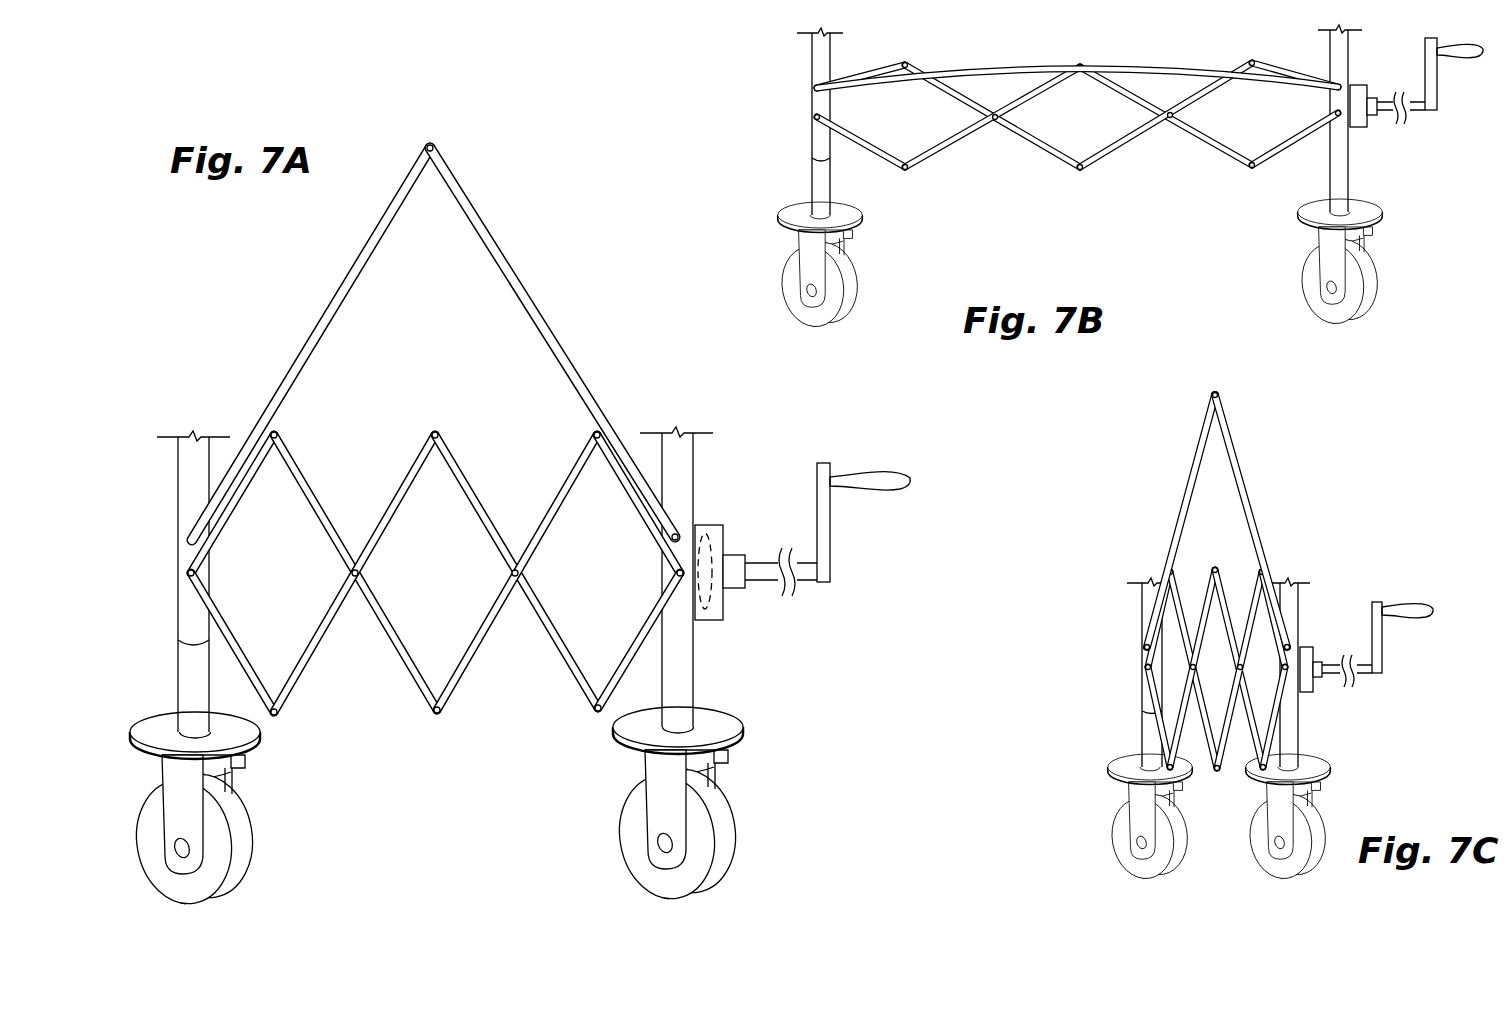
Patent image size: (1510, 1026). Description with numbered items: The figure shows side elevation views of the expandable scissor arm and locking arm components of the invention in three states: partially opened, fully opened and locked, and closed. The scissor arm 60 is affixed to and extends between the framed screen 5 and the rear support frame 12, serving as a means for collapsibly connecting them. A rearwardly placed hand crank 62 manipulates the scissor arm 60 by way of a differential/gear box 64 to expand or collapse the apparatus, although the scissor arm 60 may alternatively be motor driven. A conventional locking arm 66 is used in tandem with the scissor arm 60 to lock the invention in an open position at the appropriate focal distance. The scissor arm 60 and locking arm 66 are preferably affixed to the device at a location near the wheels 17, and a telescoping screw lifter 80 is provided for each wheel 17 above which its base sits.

In FIG. 7A, the framed screen 5 is at (196, 418).
In FIG. 7A, the rear support frame 12 is at (708, 491).
In FIG. 7A, the wheel 17 is at (232, 865).
In FIG. 7A, the scissor arm 60 is at (353, 662).
In FIG. 7B, the scissor arm 60 is at (1100, 167).
In FIG. 7C, the scissor arm 60 is at (1201, 754).
In FIG. 7A, the hand crank 62 is at (843, 585).
In FIG. 7B, the hand crank 62 is at (1442, 110).
In FIG. 7C, the hand crank 62 is at (1390, 640).
In FIG. 7A, the differential/gear box 64 is at (738, 610).
In FIG. 7B, the differential/gear box 64 is at (1370, 133).
In FIG. 7A, the locking arm 66 is at (317, 311).
In FIG. 7B, the locking arm 66 is at (1176, 68).
In FIG. 7C, the locking arm 66 is at (1256, 495).
In FIG. 7A, the telescoping screw lifter 80 is at (262, 762).